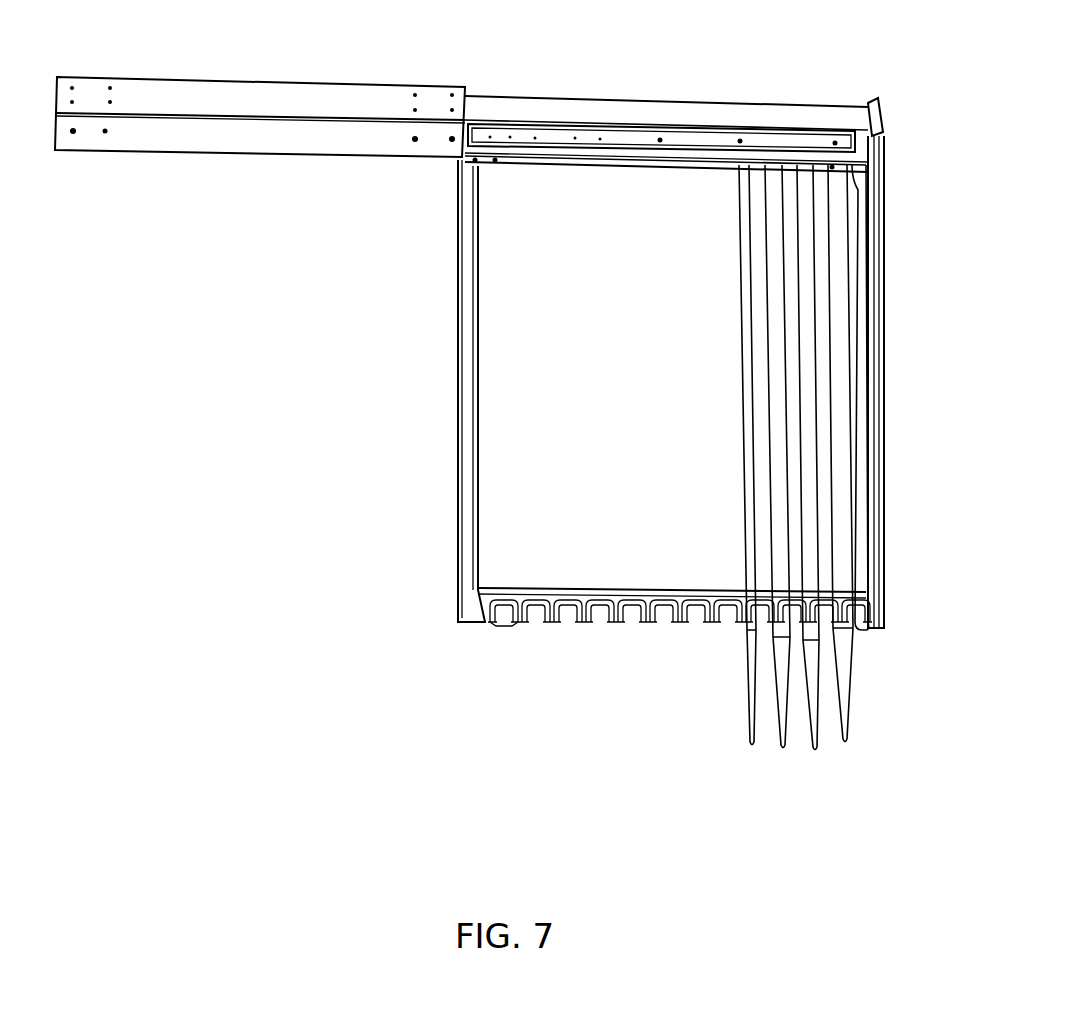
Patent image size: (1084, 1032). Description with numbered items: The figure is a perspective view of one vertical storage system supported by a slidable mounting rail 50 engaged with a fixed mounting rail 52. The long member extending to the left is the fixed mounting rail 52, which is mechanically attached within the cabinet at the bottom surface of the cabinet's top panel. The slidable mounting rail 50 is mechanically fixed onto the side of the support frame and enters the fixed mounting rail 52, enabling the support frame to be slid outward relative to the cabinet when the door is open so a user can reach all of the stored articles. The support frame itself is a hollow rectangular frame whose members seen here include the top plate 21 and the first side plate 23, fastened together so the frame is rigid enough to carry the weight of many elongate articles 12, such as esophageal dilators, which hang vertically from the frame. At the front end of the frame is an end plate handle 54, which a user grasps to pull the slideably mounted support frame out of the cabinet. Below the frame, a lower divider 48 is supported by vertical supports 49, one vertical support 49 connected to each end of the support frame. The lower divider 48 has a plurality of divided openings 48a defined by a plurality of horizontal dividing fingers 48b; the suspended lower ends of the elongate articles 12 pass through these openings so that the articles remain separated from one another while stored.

The elongate articles 12 is at (752, 748).
The top plate 21 is at (783, 120).
The first side plate 23 is at (660, 160).
The lower divider 48 is at (675, 619).
The divided openings 48a is at (624, 622).
The horizontal dividing fingers 48b is at (702, 619).
The vertical supports 49 is at (470, 365).
The slidable mounting rail 50 is at (712, 140).
The fixed mounting rail 52 is at (302, 108).
The end plate handle 54 is at (884, 107).